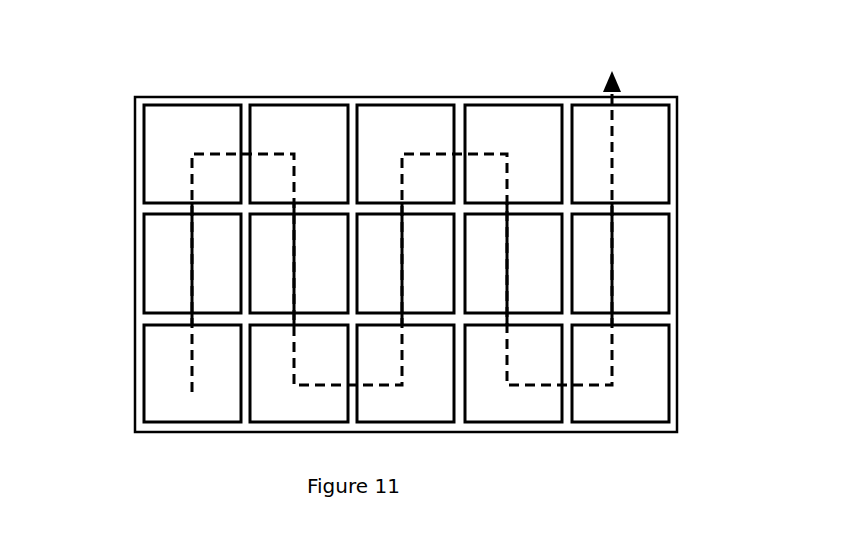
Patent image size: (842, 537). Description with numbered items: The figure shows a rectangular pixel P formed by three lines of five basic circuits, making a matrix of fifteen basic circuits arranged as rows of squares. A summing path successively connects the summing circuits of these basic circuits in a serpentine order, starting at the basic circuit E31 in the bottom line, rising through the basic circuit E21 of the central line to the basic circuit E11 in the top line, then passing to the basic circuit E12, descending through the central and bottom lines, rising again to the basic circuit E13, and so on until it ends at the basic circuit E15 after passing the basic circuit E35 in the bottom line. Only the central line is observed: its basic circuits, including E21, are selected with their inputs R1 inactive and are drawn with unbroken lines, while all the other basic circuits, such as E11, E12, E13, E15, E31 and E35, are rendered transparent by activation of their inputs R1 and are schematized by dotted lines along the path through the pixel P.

The basic circuit E11 is at (165, 172).
The basic circuit E12 is at (293, 117).
The basic circuit E13 is at (415, 117).
The basic circuit E15 is at (640, 140).
The basic circuit E21 is at (165, 278).
The basic circuit E31 is at (165, 380).
The basic circuit E35 is at (635, 383).
The pixel P is at (714, 267).